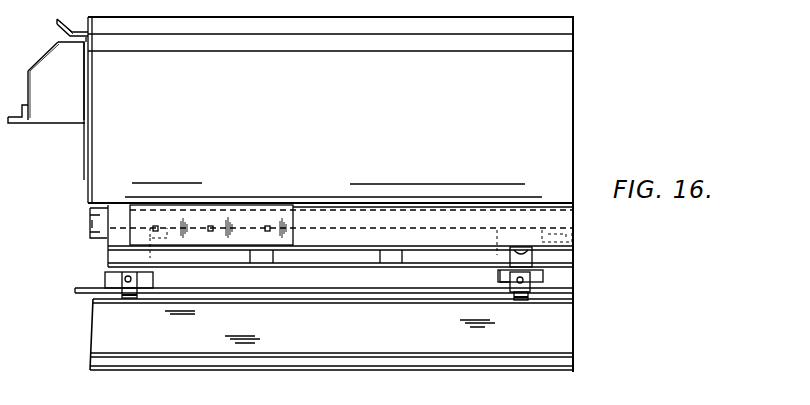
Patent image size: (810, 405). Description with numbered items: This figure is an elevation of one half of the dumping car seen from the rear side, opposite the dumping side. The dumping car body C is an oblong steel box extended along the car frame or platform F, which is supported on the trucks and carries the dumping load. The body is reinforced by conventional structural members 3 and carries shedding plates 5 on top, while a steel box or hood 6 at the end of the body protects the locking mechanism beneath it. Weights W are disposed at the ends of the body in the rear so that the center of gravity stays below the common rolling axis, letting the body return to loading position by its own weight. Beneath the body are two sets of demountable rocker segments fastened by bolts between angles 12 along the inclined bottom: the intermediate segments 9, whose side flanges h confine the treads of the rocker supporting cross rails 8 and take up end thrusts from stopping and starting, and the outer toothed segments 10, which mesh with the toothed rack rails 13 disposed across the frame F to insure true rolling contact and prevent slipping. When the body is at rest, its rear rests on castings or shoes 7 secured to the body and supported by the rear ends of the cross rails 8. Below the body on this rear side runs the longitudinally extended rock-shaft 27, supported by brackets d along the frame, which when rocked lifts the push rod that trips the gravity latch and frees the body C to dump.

The shedding plates 5 is at (55, 22).
The steel boxes or hoods 6 is at (37, 86).
The dumping car body C is at (568, 77).
The weights W is at (250, 210).
The structural members 3 is at (327, 244).
The rocker segments 10 is at (108, 257).
The rock-shaft 27 is at (457, 292).
The toothed or rack rails 13 is at (146, 281).
The brackets d is at (130, 292).
The castings or shoes 7 is at (533, 258).
The rocker supporting cross rails 8 is at (536, 283).
The side flanges h is at (500, 277).
The rocker segments 9 is at (545, 229).
The angles 12 is at (556, 241).
The car frame or platform F is at (534, 358).